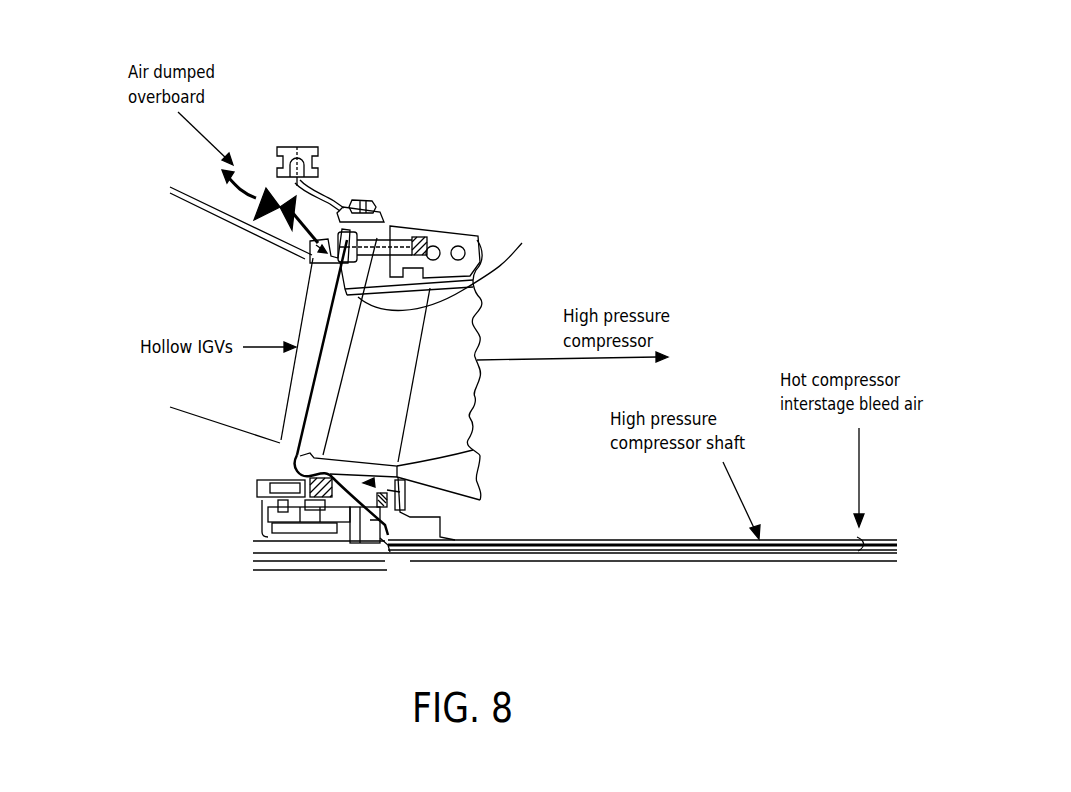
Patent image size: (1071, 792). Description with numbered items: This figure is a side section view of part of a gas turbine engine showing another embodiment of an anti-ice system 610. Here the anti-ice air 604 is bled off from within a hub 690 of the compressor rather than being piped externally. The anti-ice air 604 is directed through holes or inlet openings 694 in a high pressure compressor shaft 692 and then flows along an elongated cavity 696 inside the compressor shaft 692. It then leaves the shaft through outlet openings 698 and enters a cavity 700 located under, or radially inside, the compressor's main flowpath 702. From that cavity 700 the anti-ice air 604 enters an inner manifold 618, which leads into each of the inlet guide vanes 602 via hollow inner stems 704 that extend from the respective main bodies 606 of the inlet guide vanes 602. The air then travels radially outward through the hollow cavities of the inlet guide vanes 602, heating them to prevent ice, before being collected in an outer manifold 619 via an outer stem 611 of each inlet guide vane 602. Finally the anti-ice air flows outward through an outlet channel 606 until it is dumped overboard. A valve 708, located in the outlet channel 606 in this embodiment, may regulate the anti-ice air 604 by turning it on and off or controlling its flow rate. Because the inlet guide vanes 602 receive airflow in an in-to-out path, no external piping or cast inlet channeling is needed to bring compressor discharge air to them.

The anti-ice system 610 is at (338, 84).
The valve 708 is at (378, 155).
The outlet channel 606 is at (340, 203).
The outer stem 611 is at (352, 219).
The inlet guide vanes 602 is at (481, 282).
The outer manifold 619 is at (237, 249).
The anti-ice air 604 is at (342, 301).
The main flowpath 702 is at (448, 390).
The cavity 700 is at (493, 495).
The hollow inner stems 704 is at (173, 457).
The inner manifold 618 is at (219, 512).
The outlet openings 698 is at (440, 584).
The elongated cavity 696 is at (592, 553).
The high pressure compressor shaft 692 is at (700, 561).
The inlet openings 694 is at (866, 542).
The hub 690 is at (925, 467).